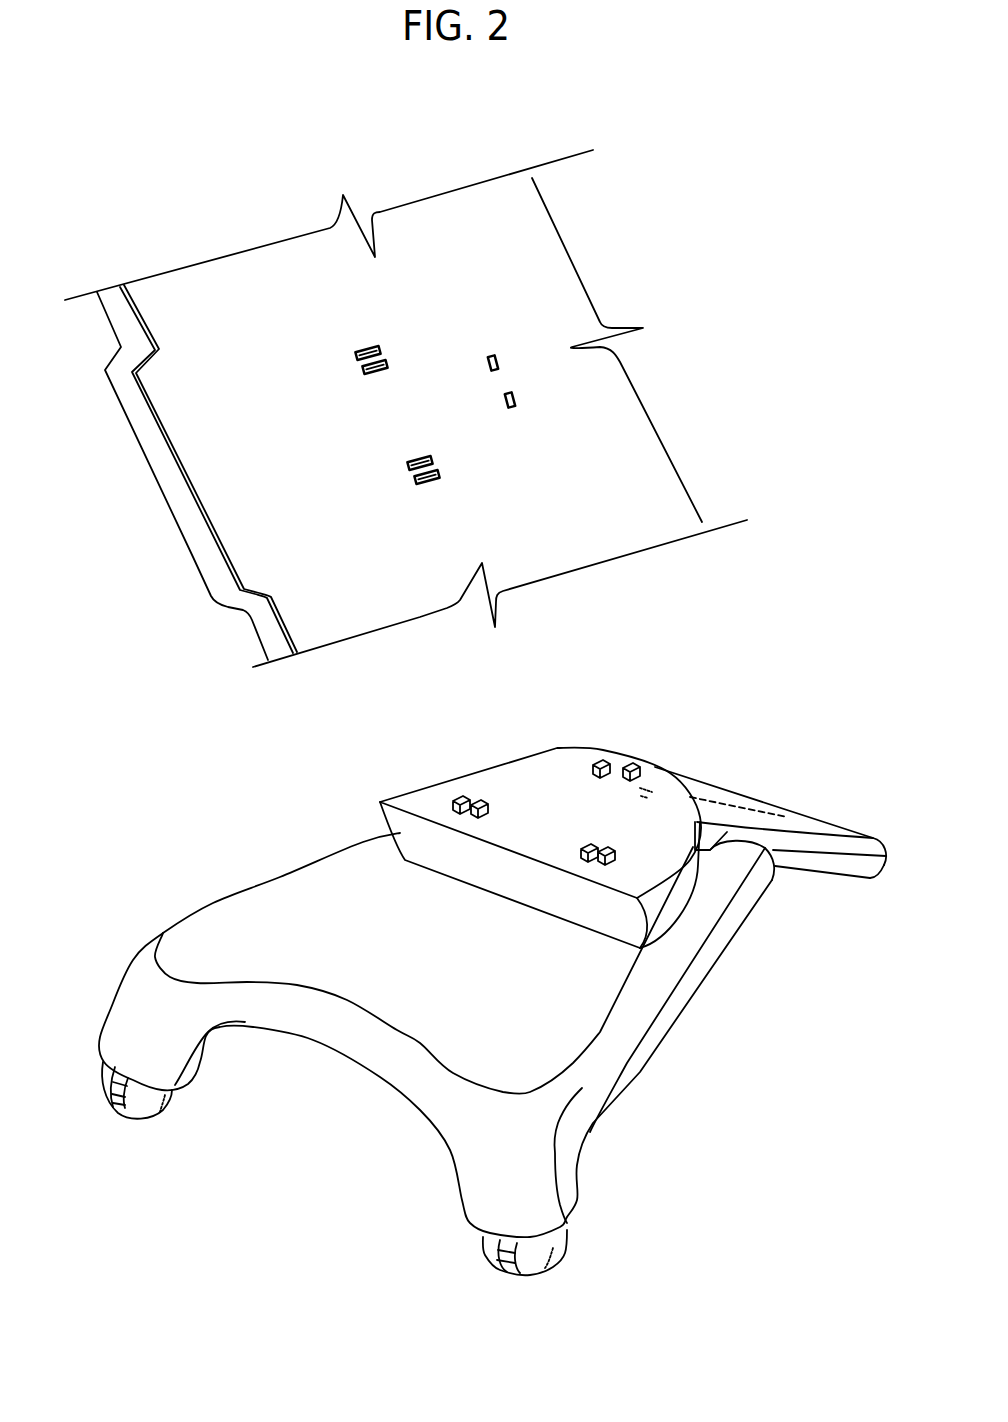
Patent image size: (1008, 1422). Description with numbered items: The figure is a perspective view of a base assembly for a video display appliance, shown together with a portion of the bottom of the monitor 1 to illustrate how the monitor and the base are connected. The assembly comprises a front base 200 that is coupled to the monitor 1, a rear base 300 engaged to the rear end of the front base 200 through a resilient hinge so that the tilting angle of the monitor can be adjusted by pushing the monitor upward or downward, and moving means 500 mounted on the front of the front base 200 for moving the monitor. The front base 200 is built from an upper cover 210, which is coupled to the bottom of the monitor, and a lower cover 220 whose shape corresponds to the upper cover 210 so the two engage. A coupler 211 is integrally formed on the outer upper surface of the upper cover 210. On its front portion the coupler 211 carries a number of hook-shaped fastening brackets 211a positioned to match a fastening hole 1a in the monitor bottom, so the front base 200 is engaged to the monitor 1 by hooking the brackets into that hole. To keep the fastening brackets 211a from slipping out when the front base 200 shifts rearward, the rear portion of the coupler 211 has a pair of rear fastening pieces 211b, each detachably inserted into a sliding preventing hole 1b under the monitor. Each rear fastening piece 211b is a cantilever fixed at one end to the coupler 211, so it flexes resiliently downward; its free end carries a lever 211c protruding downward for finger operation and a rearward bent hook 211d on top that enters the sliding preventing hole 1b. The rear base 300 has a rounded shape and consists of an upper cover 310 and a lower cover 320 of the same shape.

The monitor 1 is at (195, 558).
The fastening hole 1a is at (422, 488).
The sliding preventing hole 1b is at (518, 395).
The front base 200 is at (645, 1073).
The upper cover 210 is at (688, 945).
The lower cover 220 is at (665, 1018).
The coupler 211 is at (438, 796).
The fastening bracket 211a is at (463, 797).
The rear fastening piece 211b is at (597, 762).
The lever 211c is at (712, 792).
The hook 211d is at (608, 758).
The rear base 300 is at (677, 773).
The upper cover 310 is at (870, 850).
The lower cover 320 is at (833, 870).
The moving means 500 is at (166, 1124).